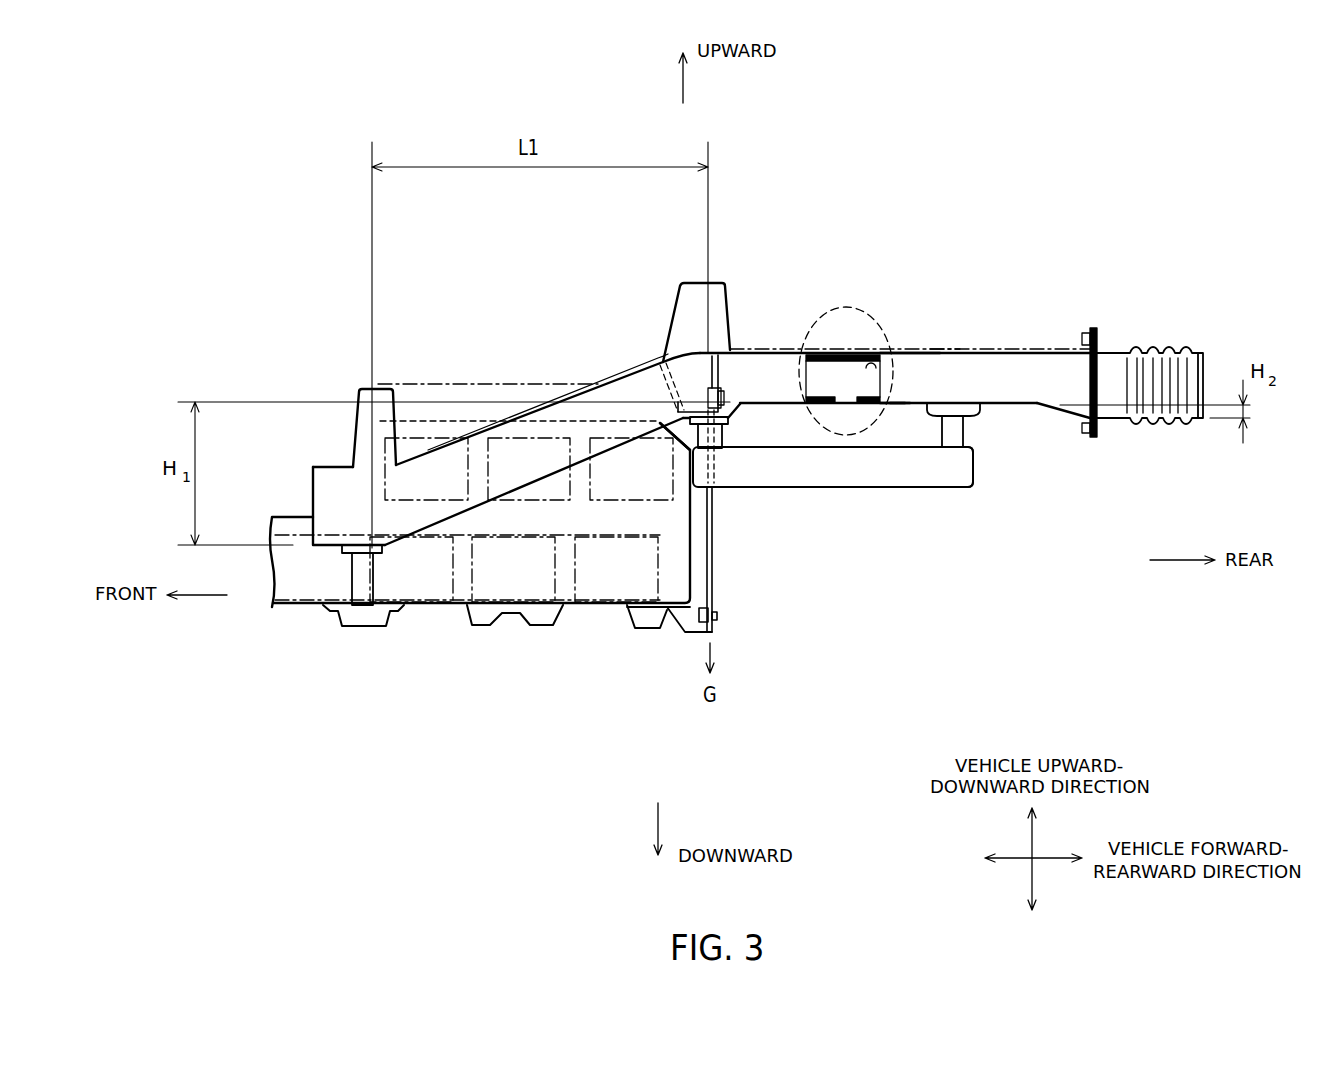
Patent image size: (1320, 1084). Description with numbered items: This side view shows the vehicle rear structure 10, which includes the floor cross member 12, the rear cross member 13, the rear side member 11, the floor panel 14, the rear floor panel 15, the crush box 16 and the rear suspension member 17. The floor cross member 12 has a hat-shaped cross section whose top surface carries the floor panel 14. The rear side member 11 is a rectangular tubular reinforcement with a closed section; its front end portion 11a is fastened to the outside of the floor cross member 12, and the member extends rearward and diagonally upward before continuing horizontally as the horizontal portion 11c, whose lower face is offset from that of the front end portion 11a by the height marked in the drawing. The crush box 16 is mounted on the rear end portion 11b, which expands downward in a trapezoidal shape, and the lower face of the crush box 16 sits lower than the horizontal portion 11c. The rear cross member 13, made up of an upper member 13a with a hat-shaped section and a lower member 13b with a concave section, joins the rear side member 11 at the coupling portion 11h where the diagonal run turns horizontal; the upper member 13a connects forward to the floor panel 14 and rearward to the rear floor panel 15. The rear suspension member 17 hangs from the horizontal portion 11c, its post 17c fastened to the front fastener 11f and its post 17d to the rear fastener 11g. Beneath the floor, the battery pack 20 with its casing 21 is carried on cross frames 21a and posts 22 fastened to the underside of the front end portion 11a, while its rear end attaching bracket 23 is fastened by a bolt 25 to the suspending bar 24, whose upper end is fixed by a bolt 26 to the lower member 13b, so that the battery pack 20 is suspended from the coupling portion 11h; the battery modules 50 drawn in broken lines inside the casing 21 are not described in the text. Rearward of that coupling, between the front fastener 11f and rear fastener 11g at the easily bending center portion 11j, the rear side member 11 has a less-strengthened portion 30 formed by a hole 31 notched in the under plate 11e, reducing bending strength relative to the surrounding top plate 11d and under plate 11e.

The vehicle rear structure 10 is at (1124, 211).
The rear side member 11 is at (1029, 401).
The front end portion 11a is at (403, 513).
The rear end portion 11b is at (1090, 385).
The horizontal portion 11c is at (893, 407).
The top plate 11d is at (905, 357).
The under plate 11e is at (873, 410).
The front fastener 11f is at (668, 423).
The rear fastener 11g is at (965, 432).
The coupling portion 11h is at (687, 370).
The center portion 11j is at (893, 407).
The floor cross member 12 is at (357, 427).
The rear cross member 13 is at (735, 292).
The upper member 13a is at (717, 283).
The lower member 13b is at (763, 347).
The floor panel 14 is at (500, 383).
The rear floor panel 15 is at (942, 353).
The crush box 16 is at (1158, 352).
The rear suspension member 17 is at (937, 498).
The post 17c is at (727, 457).
The post 17d is at (975, 445).
The battery pack 20 is at (592, 618).
The casing 21 is at (452, 618).
The cross frame 21a is at (358, 627).
The post 22 is at (350, 575).
The rear end attaching bracket 23 is at (683, 635).
The suspending bar 24 is at (717, 567).
The bolt 25 is at (717, 616).
The bolt 26 is at (755, 410).
The less-strengthened portion 30 is at (880, 307).
The hole 31 is at (840, 430).
The battery module 50 is at (557, 572).